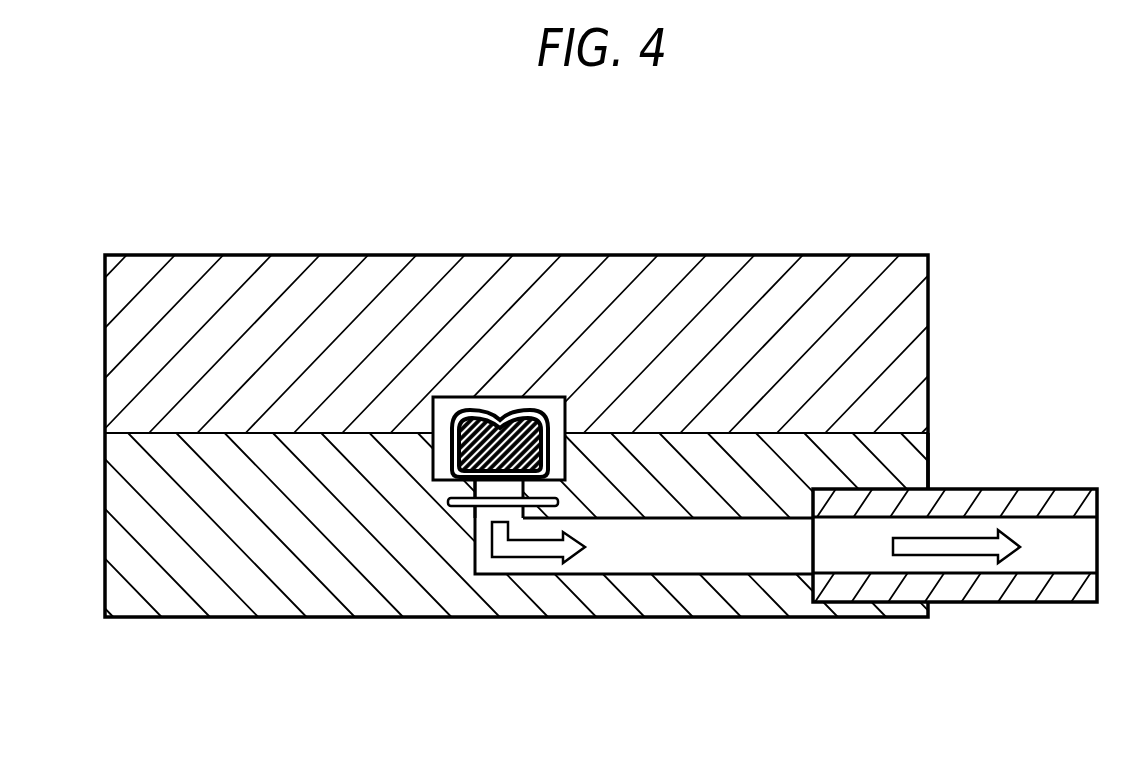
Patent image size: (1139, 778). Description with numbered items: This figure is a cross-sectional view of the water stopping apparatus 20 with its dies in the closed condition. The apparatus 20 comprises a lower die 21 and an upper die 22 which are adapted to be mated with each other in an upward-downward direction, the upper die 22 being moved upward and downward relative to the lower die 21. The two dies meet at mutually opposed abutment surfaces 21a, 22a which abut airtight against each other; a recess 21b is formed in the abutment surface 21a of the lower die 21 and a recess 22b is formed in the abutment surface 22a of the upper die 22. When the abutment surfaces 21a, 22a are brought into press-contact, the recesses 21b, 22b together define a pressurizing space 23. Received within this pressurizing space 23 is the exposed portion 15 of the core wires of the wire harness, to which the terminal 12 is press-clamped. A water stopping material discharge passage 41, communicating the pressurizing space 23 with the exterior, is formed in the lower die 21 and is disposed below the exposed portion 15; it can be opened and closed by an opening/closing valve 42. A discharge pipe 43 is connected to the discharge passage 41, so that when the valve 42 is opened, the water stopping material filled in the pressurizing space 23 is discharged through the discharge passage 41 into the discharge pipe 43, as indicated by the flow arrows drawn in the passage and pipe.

The water stopping apparatus 20 is at (561, 434).
The upper die 22 is at (848, 240).
The lower die 21 is at (224, 640).
The abutment surface of the lower die 21a is at (845, 433).
The abutment surface of the upper die 22a is at (930, 457).
The recess of the upper die 22b is at (434, 400).
The recess of the lower die 21b is at (437, 468).
The pressurizing space 23 is at (320, 320).
The exposed portion of the core wires 15 is at (552, 398).
The terminal 12 is at (456, 446).
The opening/closing valve 42 is at (480, 500).
The water stopping material discharge passage 41 is at (688, 553).
The discharge pipe 43 is at (1053, 595).